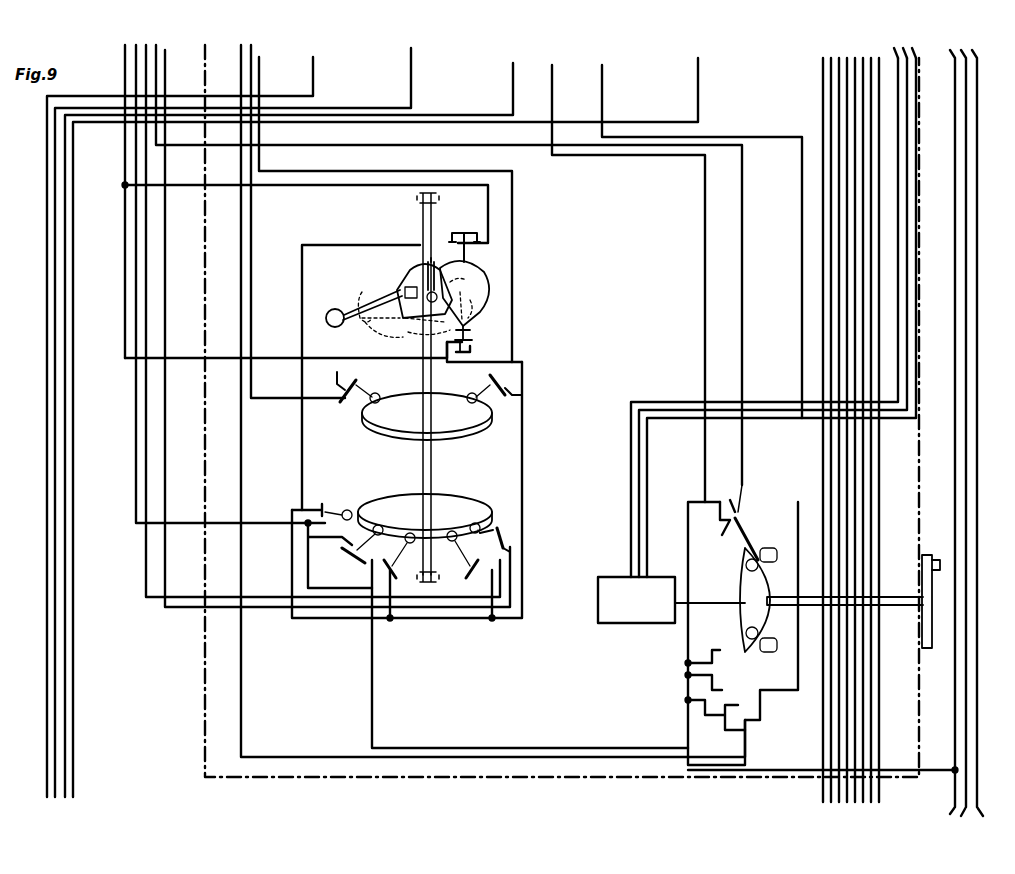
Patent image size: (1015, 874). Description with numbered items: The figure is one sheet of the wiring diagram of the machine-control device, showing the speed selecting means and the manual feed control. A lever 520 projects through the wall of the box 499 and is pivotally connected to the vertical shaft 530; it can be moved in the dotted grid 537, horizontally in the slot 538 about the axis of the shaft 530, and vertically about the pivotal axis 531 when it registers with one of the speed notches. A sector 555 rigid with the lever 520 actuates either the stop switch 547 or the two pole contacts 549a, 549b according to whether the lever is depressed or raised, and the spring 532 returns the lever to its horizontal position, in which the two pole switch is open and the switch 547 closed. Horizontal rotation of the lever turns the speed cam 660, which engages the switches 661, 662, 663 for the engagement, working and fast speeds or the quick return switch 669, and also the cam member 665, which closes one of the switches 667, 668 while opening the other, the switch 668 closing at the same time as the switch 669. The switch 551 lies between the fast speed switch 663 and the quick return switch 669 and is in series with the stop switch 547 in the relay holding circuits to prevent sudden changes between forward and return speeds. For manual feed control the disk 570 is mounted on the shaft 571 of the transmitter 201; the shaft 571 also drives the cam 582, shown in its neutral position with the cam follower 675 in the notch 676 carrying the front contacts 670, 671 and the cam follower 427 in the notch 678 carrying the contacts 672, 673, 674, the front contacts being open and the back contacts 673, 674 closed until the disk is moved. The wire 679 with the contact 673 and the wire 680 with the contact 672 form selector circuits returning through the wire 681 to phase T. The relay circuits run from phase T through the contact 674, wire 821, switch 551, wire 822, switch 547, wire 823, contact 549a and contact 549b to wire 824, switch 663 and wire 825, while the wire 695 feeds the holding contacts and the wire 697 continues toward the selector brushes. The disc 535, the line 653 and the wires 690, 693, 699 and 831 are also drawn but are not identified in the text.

The transmitter 201 is at (636, 600).
The cam follower 427 is at (746, 634).
The box 499 is at (203, 708).
The lever 520 is at (338, 310).
The vertical shaft 530 is at (433, 481).
The pivotal axis 531 is at (408, 284).
The spring 532 is at (426, 262).
The contact disc 535 is at (452, 472).
The grid 537 is at (472, 332).
The slot 538 is at (388, 328).
The electric impulse contact piece 547 is at (470, 258).
The contact 549a is at (475, 340).
The contact 549b is at (478, 356).
The switch 551 is at (360, 548).
The sector 555 is at (482, 290).
The disk 570 is at (928, 610).
The shaft 571 is at (698, 598).
The cam 582 is at (772, 548).
The power line 653 is at (600, 432).
The speed cam 660 is at (352, 508).
The switch 661 is at (518, 540).
The switch 662 is at (468, 575).
The fast speed switch 663 is at (392, 568).
The cam member 665 is at (372, 418).
The switch 667 is at (358, 384).
The switch 668 is at (505, 395).
The quick return switch 669 is at (318, 507).
The front contact 670 is at (738, 490).
The front contact 671 is at (752, 535).
The front contact 672 is at (712, 655).
The back contact 673 is at (708, 686).
The back contact 674 is at (712, 719).
The cam follower 675 is at (746, 563).
The notch 676 is at (778, 558).
The notch 678 is at (772, 652).
The wire 679 is at (242, 56).
The wire 680 is at (604, 67).
The wire 681 is at (770, 768).
The conductor 690 is at (166, 52).
The conductor 693 is at (252, 56).
The wire 695 is at (125, 45).
The wire 697 is at (262, 95).
The conductor 699 is at (330, 145).
The wire 821 is at (374, 685).
The wire 822 is at (300, 446).
The wire 823 is at (123, 262).
The wire 824 is at (524, 485).
The wire 825 is at (134, 461).
The conductor 831 is at (144, 541).